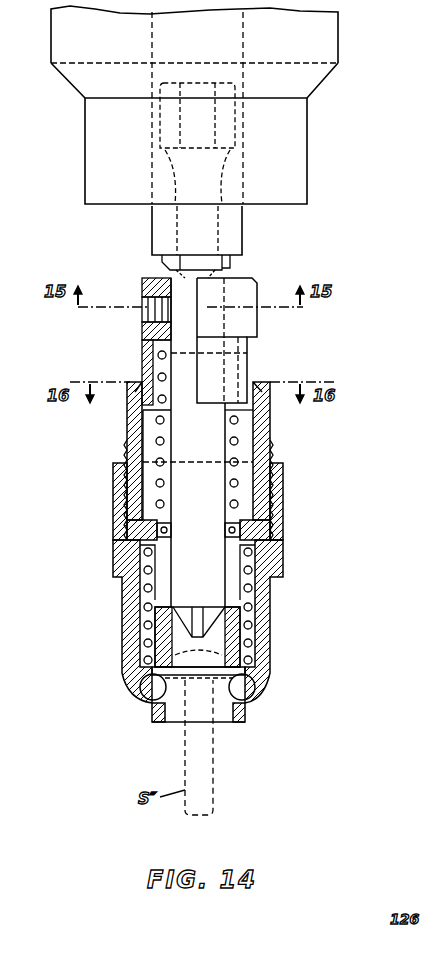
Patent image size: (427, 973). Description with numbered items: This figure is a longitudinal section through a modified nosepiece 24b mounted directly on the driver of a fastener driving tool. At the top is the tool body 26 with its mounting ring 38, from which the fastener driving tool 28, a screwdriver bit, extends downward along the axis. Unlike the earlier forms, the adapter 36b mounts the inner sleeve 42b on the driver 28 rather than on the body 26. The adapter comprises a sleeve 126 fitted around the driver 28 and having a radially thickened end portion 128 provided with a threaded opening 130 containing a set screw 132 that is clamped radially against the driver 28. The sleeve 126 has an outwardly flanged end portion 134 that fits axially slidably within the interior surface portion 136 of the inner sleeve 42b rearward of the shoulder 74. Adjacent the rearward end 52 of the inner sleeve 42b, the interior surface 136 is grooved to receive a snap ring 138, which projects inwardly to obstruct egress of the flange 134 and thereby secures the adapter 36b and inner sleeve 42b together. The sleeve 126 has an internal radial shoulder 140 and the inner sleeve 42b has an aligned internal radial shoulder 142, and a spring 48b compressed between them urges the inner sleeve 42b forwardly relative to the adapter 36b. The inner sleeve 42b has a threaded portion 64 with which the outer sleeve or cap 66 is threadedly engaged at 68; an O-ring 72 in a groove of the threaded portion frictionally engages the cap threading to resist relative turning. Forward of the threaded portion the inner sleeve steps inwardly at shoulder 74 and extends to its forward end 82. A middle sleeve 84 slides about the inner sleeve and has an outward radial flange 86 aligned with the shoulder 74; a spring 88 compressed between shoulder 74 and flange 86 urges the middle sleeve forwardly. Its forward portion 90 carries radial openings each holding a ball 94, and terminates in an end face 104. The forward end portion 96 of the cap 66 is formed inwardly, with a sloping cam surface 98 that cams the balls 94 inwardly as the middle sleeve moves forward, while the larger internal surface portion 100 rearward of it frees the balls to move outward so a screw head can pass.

The body 26 is at (330, 36).
The mounting ring 38 is at (305, 118).
The fastener driving tool 28 is at (162, 290).
The set screw 132 is at (142, 310).
The threaded opening 130 is at (144, 328).
The internal radial shoulder 140 is at (160, 355).
The sleeve 126 is at (145, 365).
The radially thickened end portion 128 is at (250, 278).
The adapter 36b is at (256, 352).
The rearward end 52 is at (258, 386).
The snap ring 138 is at (262, 392).
The inner sleeve 42b is at (268, 432).
The outwardly flanged end portion 134 is at (147, 410).
The threaded portion 64 is at (128, 448).
The threaded engagement 68 is at (271, 470).
The interior surface portion 136 is at (141, 476).
The O-ring 72 is at (130, 512).
The spring 48b is at (165, 536).
The nosepiece 24b is at (292, 525).
The shoulder 74 is at (137, 548).
The outer sleeve or cap 66 is at (280, 548).
The internal radial shoulder 142 is at (230, 538).
The spring 88 is at (145, 656).
The middle sleeve 84 is at (243, 633).
The forward end 82 is at (213, 664).
The outward radial flange 86 is at (252, 668).
The ball 94 is at (148, 690).
The internal surface portion 100 is at (268, 680).
The cam surface 98 is at (150, 702).
The forward end portion 96 is at (250, 700).
The forward portion 90 is at (150, 708).
The end face 104 is at (228, 722).